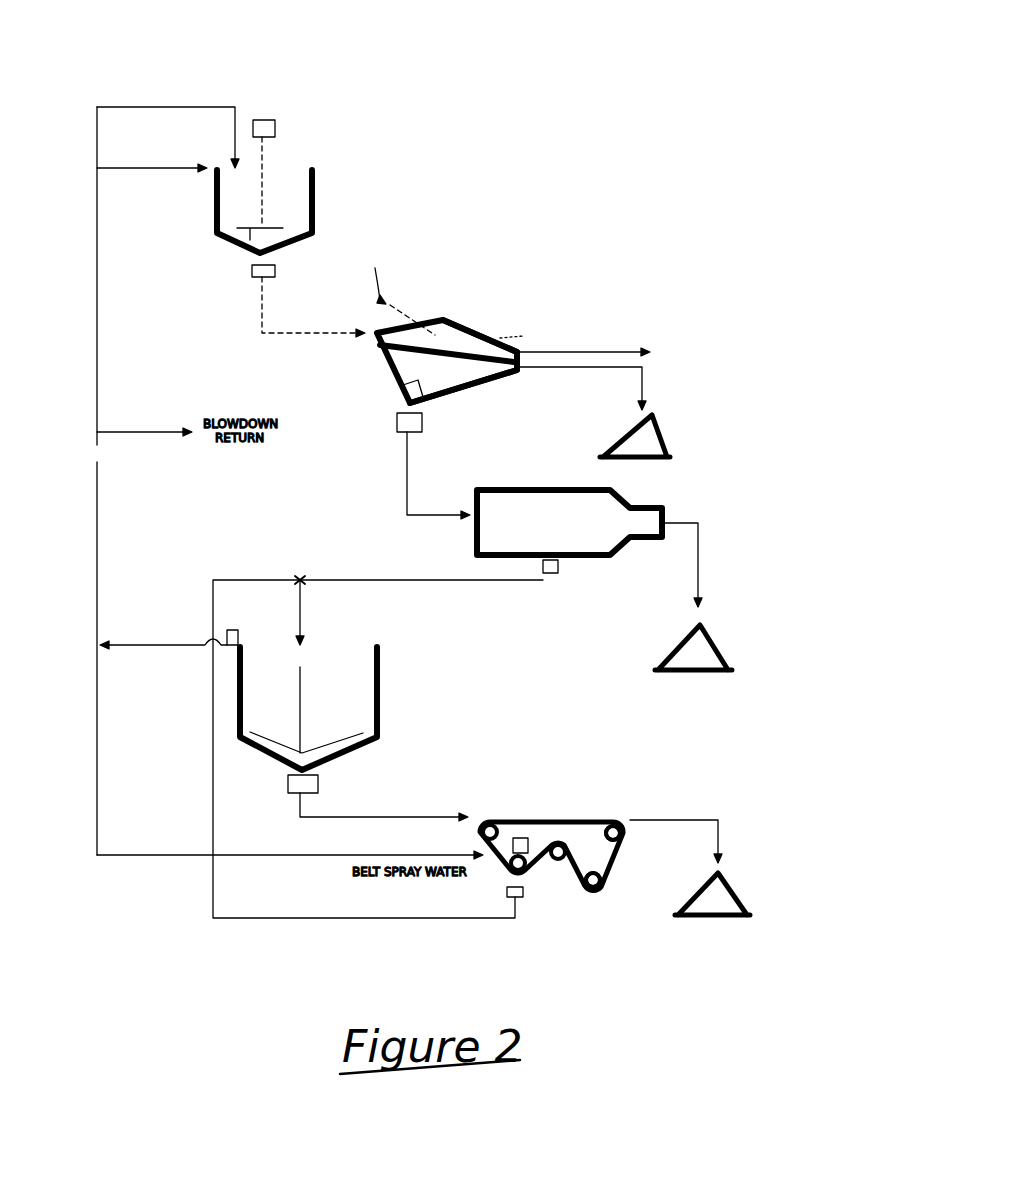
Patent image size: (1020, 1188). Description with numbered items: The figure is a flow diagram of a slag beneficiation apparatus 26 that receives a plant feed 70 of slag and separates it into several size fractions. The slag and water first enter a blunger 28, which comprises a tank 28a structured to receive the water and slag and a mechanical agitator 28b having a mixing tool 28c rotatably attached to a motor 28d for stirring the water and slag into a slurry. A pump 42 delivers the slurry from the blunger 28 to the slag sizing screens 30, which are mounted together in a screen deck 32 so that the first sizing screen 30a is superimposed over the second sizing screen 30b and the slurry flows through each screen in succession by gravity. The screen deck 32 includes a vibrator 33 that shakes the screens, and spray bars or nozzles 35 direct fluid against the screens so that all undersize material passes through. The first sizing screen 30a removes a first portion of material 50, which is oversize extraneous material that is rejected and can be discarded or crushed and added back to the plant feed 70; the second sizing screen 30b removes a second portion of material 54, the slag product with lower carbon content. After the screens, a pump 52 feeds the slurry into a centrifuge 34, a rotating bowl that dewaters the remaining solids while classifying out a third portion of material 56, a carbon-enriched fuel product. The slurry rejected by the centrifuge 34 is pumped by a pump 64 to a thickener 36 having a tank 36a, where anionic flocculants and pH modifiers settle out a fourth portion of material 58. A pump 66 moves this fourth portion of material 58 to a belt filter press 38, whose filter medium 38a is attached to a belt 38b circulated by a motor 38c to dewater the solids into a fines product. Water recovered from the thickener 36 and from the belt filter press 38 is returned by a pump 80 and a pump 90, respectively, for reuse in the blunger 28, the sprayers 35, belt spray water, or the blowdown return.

The slag beneficiation apparatus 26 is at (560, 125).
The plant feed 70 is at (163, 77).
The blunger 28 is at (313, 193).
The tank 28a is at (213, 200).
The mechanical agitator 28b is at (265, 175).
The mixing tool 28c is at (247, 240).
The motor 28d is at (262, 117).
The pump 42 is at (275, 270).
The screen deck 32 is at (437, 317).
The slag sizing screens 30 is at (457, 340).
The first sizing screen 30a is at (470, 327).
The second sizing screen 30b is at (457, 367).
The vibrator 33 is at (402, 398).
The spray bars or nozzles 35 is at (575, 320).
The first portion of material 50 is at (685, 332).
The second portion of material 54 is at (655, 415).
The centrifuge 34 is at (490, 488).
The pump 52 is at (397, 425).
The pump 64 is at (558, 565).
The third portion of material 56 is at (713, 643).
The thickener 36 is at (378, 655).
The tank 36a is at (235, 678).
The pump 80 is at (232, 630).
The pump 66 is at (318, 783).
The belt filter press 38 is at (485, 817).
The filter medium 38a is at (622, 822).
The belt 38b is at (623, 865).
The motor 38c is at (535, 867).
The pump 90 is at (503, 888).
The fourth portion of material 58 is at (732, 890).